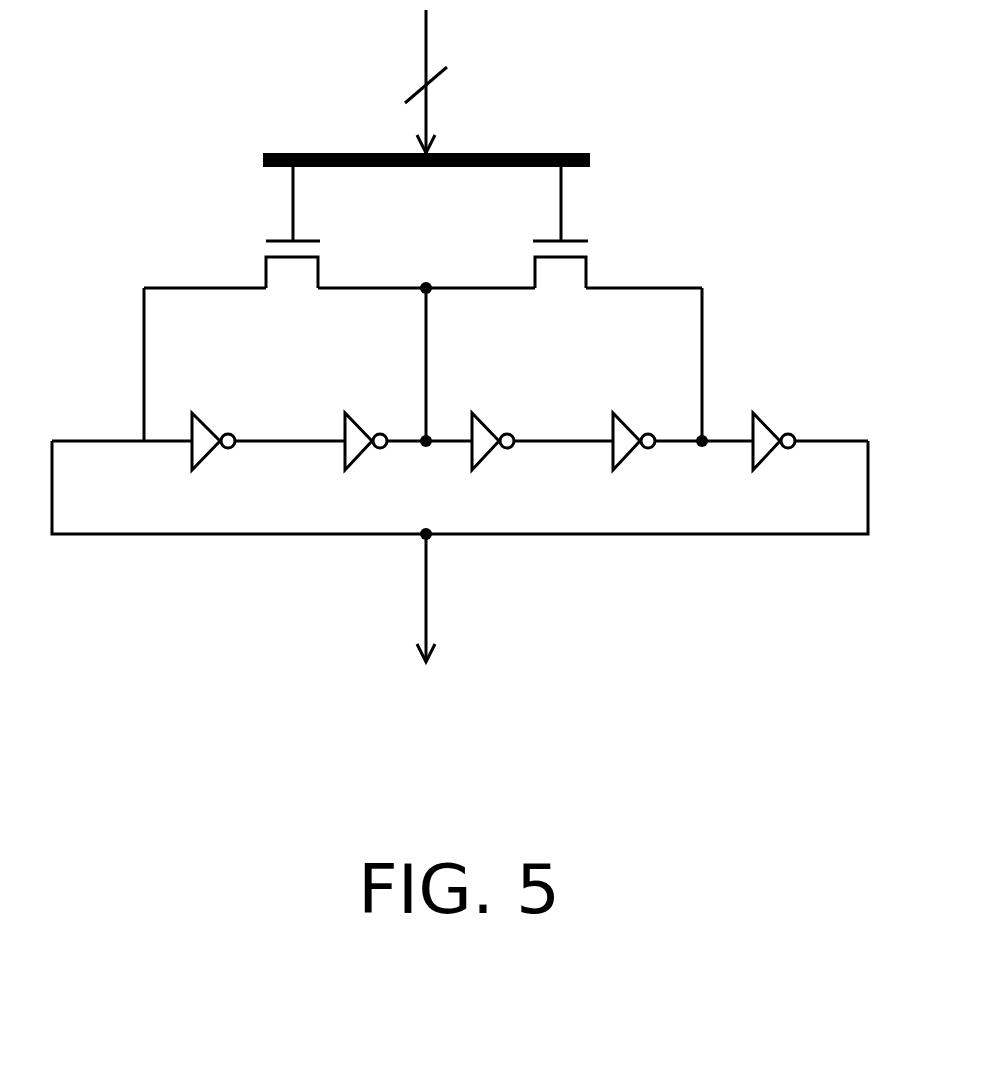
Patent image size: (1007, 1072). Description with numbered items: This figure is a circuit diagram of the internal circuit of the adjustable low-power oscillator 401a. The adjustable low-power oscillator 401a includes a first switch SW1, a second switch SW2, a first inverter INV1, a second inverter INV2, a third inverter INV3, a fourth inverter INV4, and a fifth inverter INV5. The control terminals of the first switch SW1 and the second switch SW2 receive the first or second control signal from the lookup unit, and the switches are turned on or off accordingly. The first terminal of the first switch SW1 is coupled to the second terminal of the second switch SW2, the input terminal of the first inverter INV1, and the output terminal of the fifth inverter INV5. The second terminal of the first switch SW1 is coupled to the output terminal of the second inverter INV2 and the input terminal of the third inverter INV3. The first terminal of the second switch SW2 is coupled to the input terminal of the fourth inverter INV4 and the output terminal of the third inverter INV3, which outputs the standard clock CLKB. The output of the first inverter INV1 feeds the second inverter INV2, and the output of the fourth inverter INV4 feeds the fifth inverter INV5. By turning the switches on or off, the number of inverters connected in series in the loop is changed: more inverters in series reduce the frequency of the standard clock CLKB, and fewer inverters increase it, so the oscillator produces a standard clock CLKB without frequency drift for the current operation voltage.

The first switch SW1 is at (565, 283).
The second switch SW2 is at (292, 283).
The first inverter INV1 is at (485, 458).
The second inverter INV2 is at (624, 458).
The third inverter INV3 is at (766, 415).
The fourth inverter INV4 is at (204, 458).
The fifth inverter INV5 is at (358, 458).
The standard clock CLKB is at (423, 623).
The adjustable low-power oscillator 401a is at (925, 693).